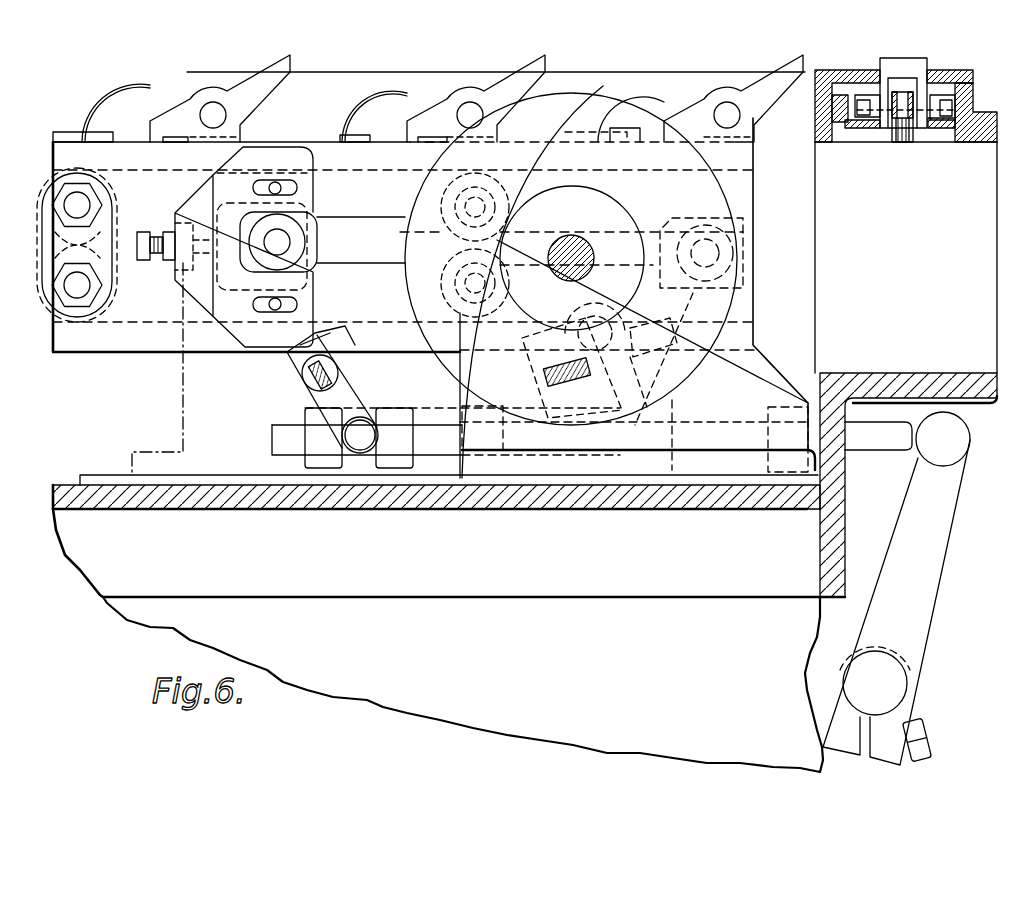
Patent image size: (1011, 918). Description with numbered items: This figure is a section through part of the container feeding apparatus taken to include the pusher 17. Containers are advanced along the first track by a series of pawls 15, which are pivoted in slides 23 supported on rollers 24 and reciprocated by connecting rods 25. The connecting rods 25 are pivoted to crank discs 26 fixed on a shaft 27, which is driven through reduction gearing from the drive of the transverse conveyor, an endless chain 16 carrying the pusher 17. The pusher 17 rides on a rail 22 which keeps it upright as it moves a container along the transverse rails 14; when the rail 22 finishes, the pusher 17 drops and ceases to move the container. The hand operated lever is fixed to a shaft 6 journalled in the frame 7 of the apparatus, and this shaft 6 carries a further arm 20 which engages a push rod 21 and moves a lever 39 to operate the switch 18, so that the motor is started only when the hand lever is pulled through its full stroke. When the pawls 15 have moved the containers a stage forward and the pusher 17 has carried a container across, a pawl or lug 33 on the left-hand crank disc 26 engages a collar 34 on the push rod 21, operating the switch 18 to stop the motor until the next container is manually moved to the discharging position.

The shaft 6 is at (893, 687).
The frame 7 is at (603, 500).
The transverse rails 14 is at (862, 72).
The pawls 15 is at (283, 68).
The endless chain 16 is at (893, 137).
The pusher 17 is at (910, 70).
The switch 18 is at (180, 393).
The arm 20 is at (950, 445).
The push rod 21 is at (433, 436).
The rail 22 is at (944, 130).
The slides 23 is at (113, 345).
The rollers 24 is at (53, 270).
The connecting rods 25 is at (357, 235).
The crank discs 26 is at (708, 193).
The shaft 27 is at (583, 243).
The pawl or lug 33 is at (630, 373).
The collar 34 is at (393, 418).
The lever 39 is at (320, 400).